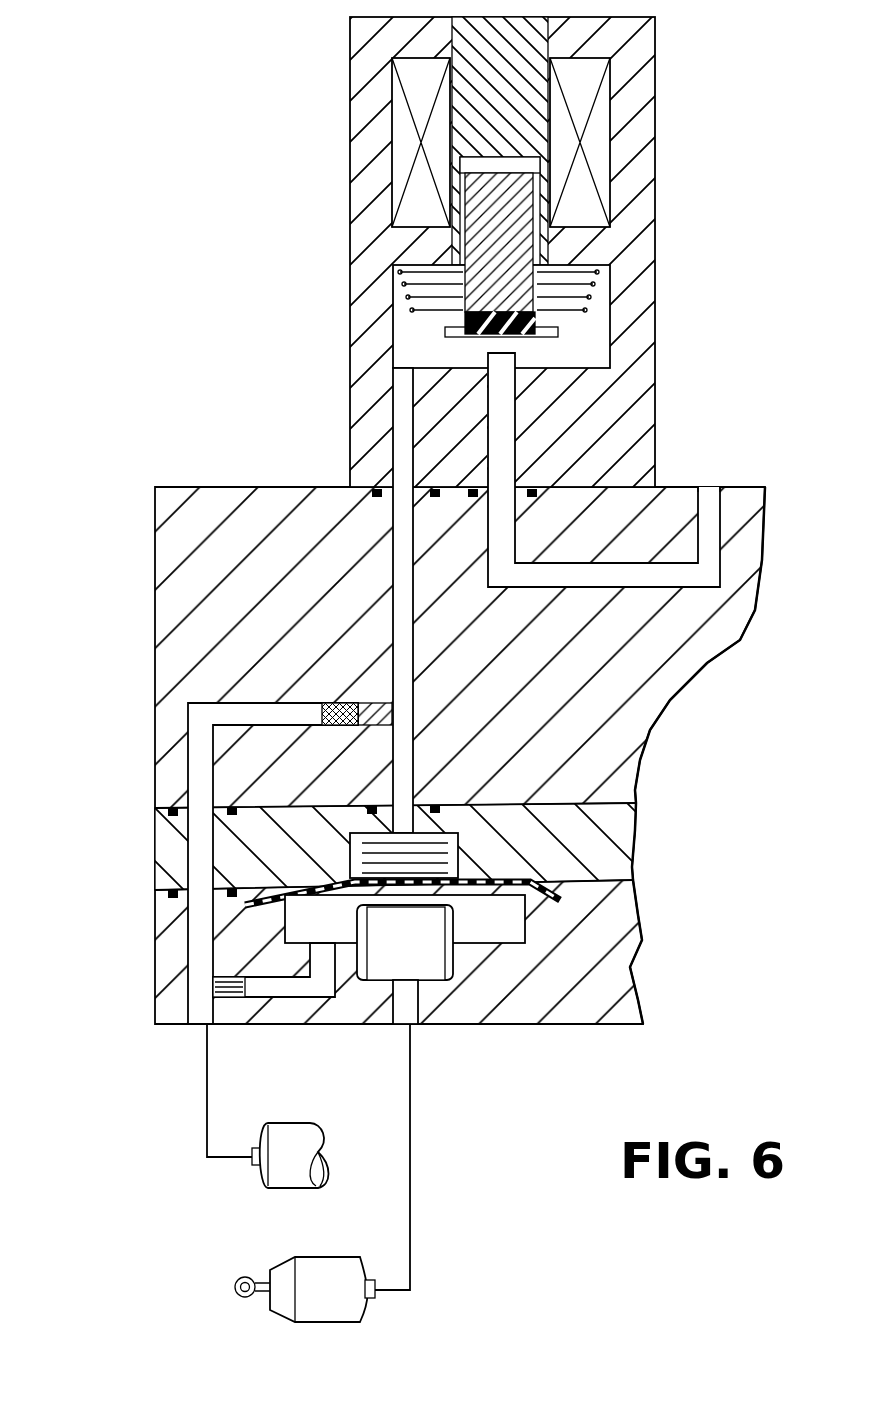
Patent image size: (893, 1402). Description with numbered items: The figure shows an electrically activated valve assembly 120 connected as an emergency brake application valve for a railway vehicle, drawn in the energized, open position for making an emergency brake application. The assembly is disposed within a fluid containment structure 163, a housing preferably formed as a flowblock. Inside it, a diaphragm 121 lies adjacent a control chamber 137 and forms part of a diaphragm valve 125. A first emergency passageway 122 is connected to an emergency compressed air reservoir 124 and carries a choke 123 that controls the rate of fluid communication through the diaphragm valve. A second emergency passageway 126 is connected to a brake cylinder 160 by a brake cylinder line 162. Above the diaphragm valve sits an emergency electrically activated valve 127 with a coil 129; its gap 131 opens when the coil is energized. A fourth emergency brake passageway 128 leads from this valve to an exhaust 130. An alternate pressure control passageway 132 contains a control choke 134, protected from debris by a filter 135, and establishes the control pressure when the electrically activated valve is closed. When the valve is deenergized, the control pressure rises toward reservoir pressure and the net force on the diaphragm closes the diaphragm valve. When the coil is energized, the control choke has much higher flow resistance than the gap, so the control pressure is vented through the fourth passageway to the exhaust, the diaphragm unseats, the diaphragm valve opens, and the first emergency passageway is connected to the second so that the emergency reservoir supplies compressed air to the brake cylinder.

The electrically activated valve assembly 120 is at (203, 420).
The diaphragm 121 is at (295, 885).
The first emergency passageway 122 is at (200, 1019).
The choke 123 is at (233, 992).
The emergency compressed air reservoir 124 is at (305, 1135).
The diaphragm valve 125 is at (652, 838).
The second emergency passageway 126 is at (410, 1022).
The emergency electrically activated valve 127 is at (332, 143).
The fourth emergency brake passageway 128 is at (670, 572).
The coil 129 is at (398, 105).
The exhaust 130 is at (708, 492).
The gap 131 is at (515, 340).
The alternate pressure control passageway 132 is at (250, 712).
The control choke 134 is at (338, 760).
The filter 135 is at (333, 703).
The control chamber 137 is at (440, 833).
The brake cylinder 160 is at (305, 1262).
The brake cylinder line 162 is at (412, 1243).
The fluid containment structure 163 is at (155, 555).